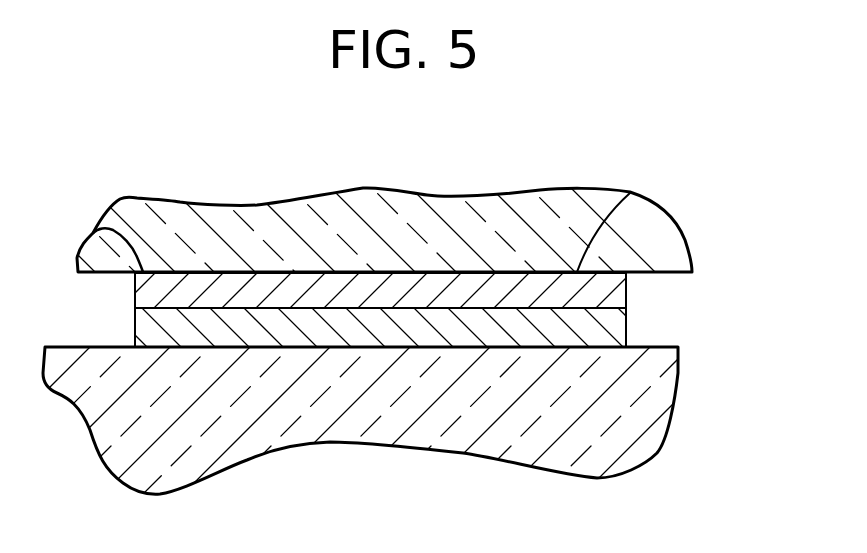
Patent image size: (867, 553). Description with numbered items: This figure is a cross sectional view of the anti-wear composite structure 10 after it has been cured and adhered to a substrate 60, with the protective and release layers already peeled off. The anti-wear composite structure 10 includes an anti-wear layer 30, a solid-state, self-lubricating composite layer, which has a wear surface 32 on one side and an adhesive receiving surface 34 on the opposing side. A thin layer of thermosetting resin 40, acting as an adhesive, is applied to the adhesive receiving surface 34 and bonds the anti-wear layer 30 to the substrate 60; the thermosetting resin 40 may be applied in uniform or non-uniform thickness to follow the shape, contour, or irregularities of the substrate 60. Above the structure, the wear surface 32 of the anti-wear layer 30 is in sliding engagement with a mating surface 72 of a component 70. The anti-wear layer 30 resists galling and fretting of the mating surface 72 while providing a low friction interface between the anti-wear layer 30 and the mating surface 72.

The anti-wear composite structure 10 is at (632, 158).
The anti-wear layer 30 is at (613, 295).
The wear surface 32 is at (100, 230).
The adhesive receiving surface 34 is at (152, 312).
The thermosetting resin 40 is at (613, 323).
The substrate 60 is at (652, 437).
The component 70 is at (660, 235).
The mating surface 72 is at (630, 193).